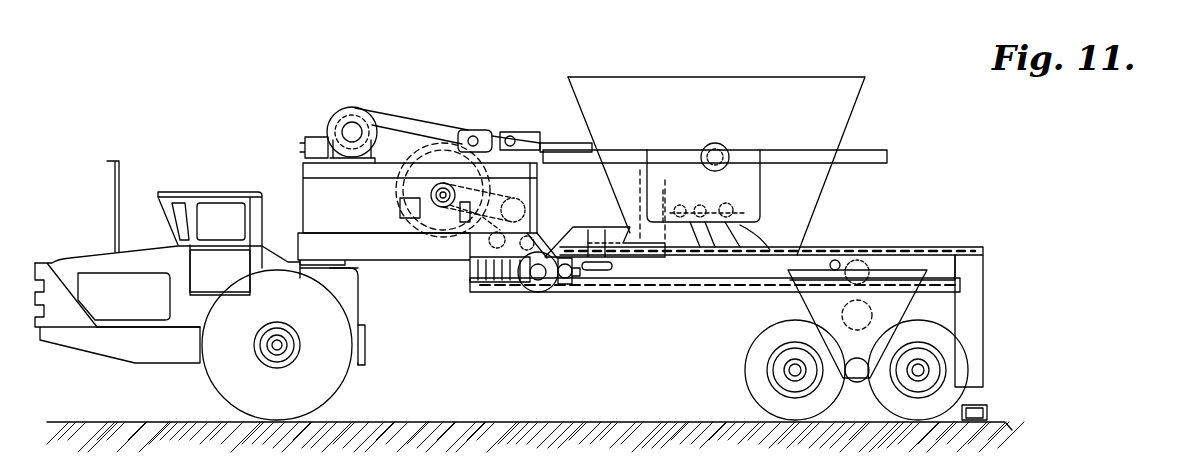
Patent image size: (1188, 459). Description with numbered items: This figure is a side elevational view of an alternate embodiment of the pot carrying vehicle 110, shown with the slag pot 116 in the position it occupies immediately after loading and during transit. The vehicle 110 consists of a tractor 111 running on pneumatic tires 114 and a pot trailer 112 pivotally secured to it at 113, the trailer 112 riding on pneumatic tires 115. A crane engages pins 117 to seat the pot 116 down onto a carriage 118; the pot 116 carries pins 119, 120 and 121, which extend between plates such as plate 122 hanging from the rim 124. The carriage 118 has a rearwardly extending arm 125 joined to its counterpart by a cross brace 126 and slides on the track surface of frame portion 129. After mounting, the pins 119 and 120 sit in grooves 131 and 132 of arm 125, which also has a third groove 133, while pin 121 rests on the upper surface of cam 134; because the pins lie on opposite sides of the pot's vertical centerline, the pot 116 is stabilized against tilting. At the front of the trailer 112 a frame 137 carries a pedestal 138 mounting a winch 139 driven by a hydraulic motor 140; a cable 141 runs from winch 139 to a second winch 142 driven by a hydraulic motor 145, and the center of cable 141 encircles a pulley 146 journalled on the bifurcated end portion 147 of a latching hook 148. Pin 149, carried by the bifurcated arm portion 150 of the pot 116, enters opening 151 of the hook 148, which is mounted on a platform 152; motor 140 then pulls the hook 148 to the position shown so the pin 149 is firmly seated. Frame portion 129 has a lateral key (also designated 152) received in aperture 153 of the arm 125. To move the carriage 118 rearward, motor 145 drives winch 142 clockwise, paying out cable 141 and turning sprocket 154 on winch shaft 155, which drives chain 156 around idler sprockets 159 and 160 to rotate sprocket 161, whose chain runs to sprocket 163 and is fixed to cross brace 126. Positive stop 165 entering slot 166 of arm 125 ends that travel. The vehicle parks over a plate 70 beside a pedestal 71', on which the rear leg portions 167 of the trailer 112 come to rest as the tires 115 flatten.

The plate 70 is at (577, 420).
The pedestal 71' is at (1004, 409).
The pot carrying vehicle 110 is at (347, 57).
The tractor 111 is at (82, 257).
The pot trailer 112 is at (970, 247).
The pivotal securement 113 is at (362, 274).
The pneumatic tires 114 is at (340, 386).
The pneumatic tires 115 is at (968, 368).
The slag pot 116 is at (825, 80).
The pins 117 is at (722, 145).
The carriage 118 is at (598, 225).
The pin 119 is at (683, 195).
The pin 120 is at (705, 205).
The pin 121 is at (735, 205).
The plate 122 is at (655, 150).
The rim 124 is at (890, 155).
The carriage arm 125 is at (638, 215).
The cross brace 126 is at (612, 235).
The frame portion 129 is at (655, 290).
The groove 131 is at (690, 235).
The groove 132 is at (725, 240).
The groove 133 is at (748, 250).
The cam 134 is at (768, 240).
The frame 137 is at (388, 255).
The pedestal 138 is at (303, 185).
The winch 139 is at (355, 107).
The hydraulic motor 140 is at (312, 137).
The cable 141 is at (424, 118).
The winch 142 is at (428, 150).
The hydraulic motor 145 is at (405, 210).
The pulley 146 is at (474, 130).
The bifurcated end portion 147 is at (500, 140).
The latching hook 148 is at (540, 130).
The pin 149 is at (548, 140).
The bifurcated arm portion 150 is at (572, 143).
The opening 151 is at (512, 132).
The platform 152 is at (563, 290).
The aperture 153 is at (578, 284).
The sprocket 154 is at (431, 188).
The winch shaft 155 is at (432, 236).
The chain 156 is at (535, 193).
The idler sprocket 159 is at (468, 250).
The idler sprocket 160 is at (525, 206).
The sprocket 161 is at (527, 290).
The sprocket 163 is at (860, 260).
The positive stop 165 is at (836, 260).
The slot 166 is at (600, 266).
The leg portion 167 is at (972, 320).